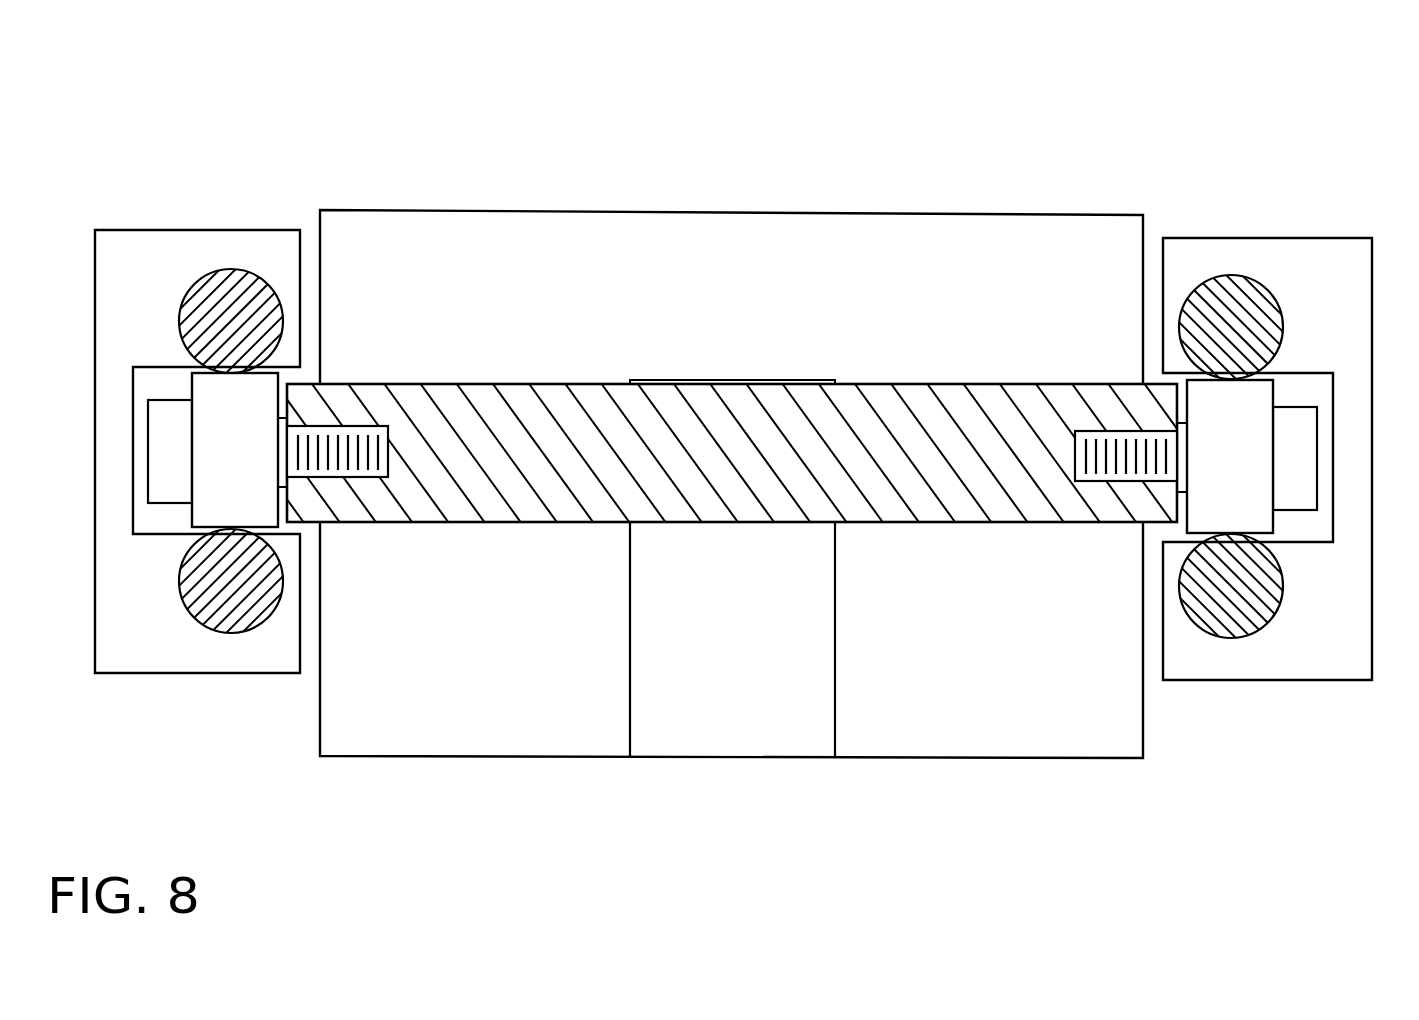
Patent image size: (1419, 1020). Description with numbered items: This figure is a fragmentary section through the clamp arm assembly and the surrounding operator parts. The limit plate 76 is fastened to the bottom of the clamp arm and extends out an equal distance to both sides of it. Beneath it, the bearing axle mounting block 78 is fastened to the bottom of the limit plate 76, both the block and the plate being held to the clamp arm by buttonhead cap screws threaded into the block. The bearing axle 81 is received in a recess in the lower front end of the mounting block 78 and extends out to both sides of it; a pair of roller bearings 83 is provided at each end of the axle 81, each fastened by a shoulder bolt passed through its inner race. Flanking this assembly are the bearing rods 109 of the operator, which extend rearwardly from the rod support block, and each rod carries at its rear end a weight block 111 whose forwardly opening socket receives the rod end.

The limit plate 76 is at (731, 540).
The bearing axle mounting block 78 is at (809, 696).
The bearing axle 81 is at (741, 379).
The roller bearings 83 is at (732, 604).
The bearing rods 109 is at (731, 498).
The weight block 111 is at (733, 367).